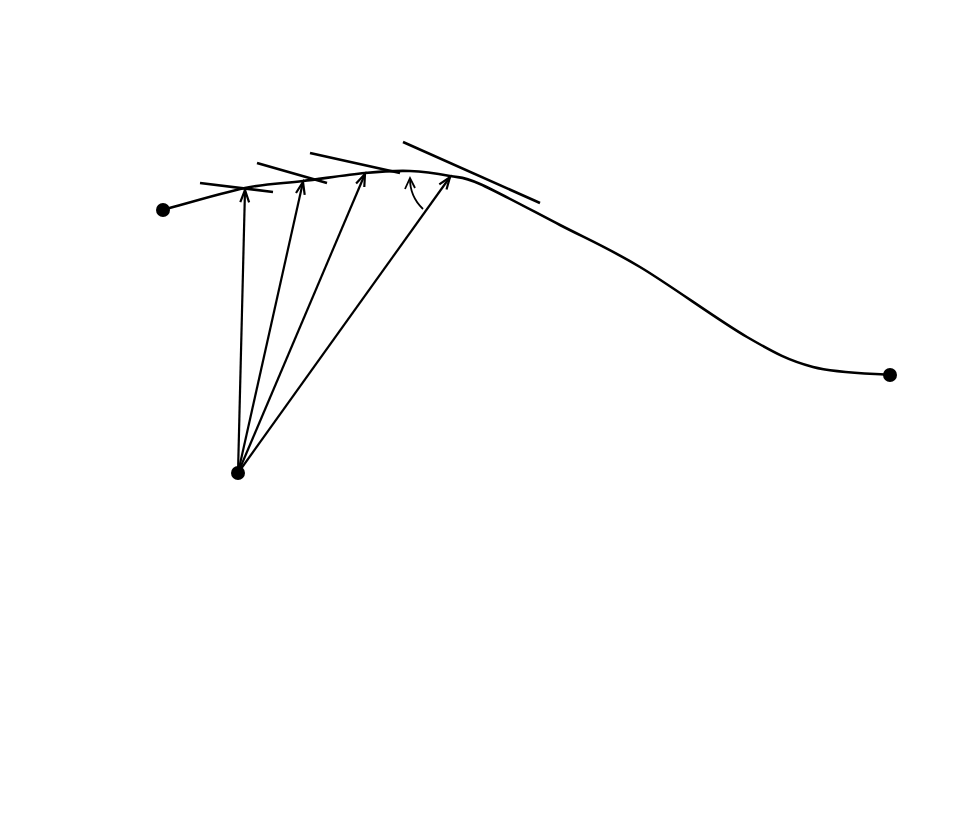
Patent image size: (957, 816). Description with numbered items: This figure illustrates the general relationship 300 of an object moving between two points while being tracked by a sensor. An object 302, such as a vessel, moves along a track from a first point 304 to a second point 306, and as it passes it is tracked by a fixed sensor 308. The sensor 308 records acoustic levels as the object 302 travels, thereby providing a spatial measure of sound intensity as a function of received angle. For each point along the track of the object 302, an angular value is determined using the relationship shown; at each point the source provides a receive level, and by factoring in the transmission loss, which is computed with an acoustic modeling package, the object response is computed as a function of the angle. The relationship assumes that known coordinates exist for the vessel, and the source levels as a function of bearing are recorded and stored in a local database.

The general relationship 300 is at (86, 58).
The object 302 is at (643, 268).
The first point (P1) 304 is at (145, 185).
The second point (P2) 306 is at (906, 347).
The fixed sensor (S) 308 is at (318, 342).